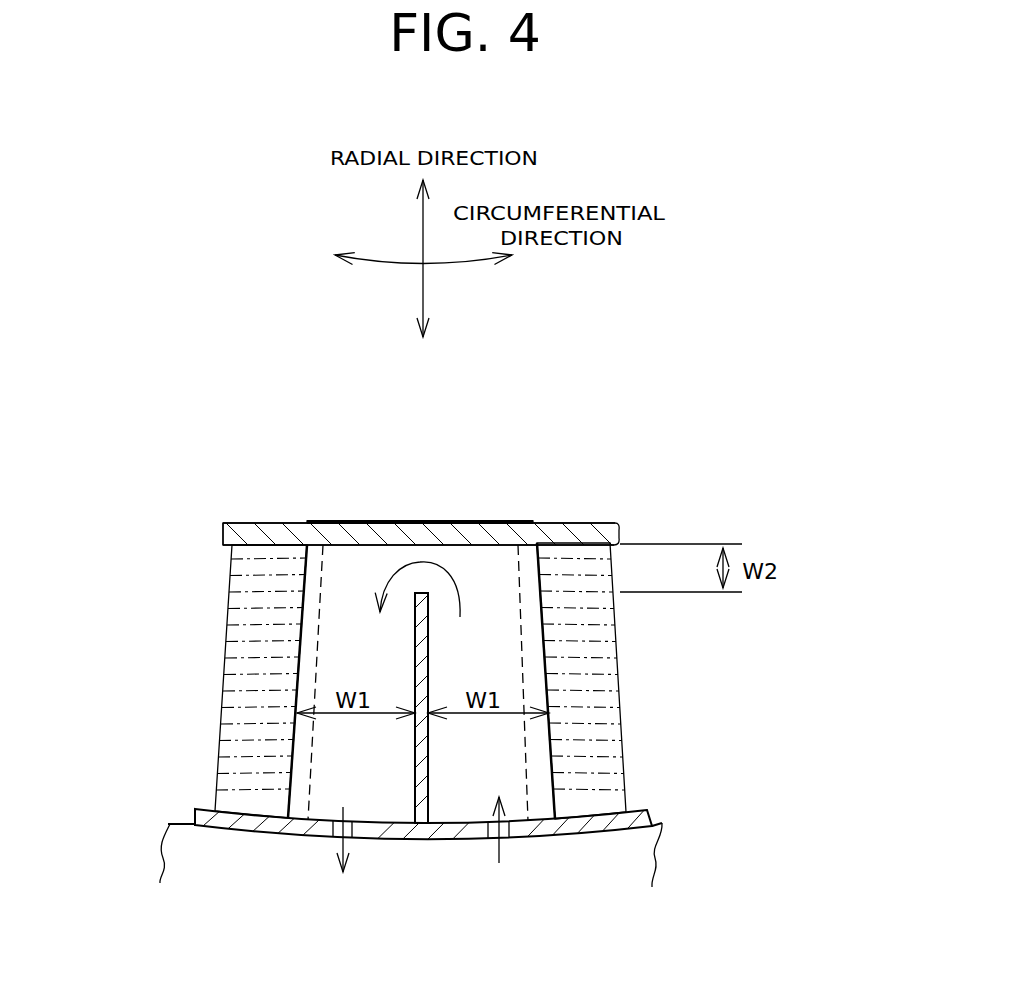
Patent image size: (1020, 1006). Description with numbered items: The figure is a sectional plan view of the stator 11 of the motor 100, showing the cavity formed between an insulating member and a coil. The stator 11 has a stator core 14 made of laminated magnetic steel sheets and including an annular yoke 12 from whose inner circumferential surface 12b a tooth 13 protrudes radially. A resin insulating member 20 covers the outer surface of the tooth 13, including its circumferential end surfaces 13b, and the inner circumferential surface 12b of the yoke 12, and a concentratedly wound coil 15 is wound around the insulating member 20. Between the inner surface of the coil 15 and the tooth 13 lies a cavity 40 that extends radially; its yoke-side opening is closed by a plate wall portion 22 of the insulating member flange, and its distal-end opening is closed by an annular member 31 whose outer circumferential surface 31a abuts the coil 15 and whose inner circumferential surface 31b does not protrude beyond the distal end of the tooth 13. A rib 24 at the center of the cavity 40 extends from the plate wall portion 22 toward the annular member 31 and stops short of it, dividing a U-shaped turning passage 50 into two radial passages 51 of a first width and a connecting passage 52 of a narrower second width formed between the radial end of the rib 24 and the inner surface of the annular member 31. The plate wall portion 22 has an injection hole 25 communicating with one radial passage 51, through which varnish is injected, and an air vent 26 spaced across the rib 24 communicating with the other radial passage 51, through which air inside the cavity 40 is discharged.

The motor 100 is at (788, 228).
The stator 11 is at (668, 300).
The yoke 12 is at (655, 855).
The inner circumferential surface of the yoke 12b is at (659, 822).
The tooth 13 is at (443, 522).
The circumferential end surface of the tooth 13b is at (287, 647).
The stator core 14 is at (602, 873).
The coil 15 is at (618, 685).
The insulating member 20 is at (205, 832).
The plate wall portion 22 is at (263, 833).
The rib 24 is at (443, 838).
The injection hole 25 is at (505, 840).
The air vent 26 is at (333, 843).
The annular member 31 is at (593, 522).
The outer circumferential surface of the annular member 31a is at (223, 542).
The inner circumferential surface of the annular member 31b is at (263, 517).
The cavity 40 is at (480, 570).
The turning passage 50 is at (508, 767).
The radial passage 51 is at (327, 735).
The connecting passage 52 is at (420, 556).